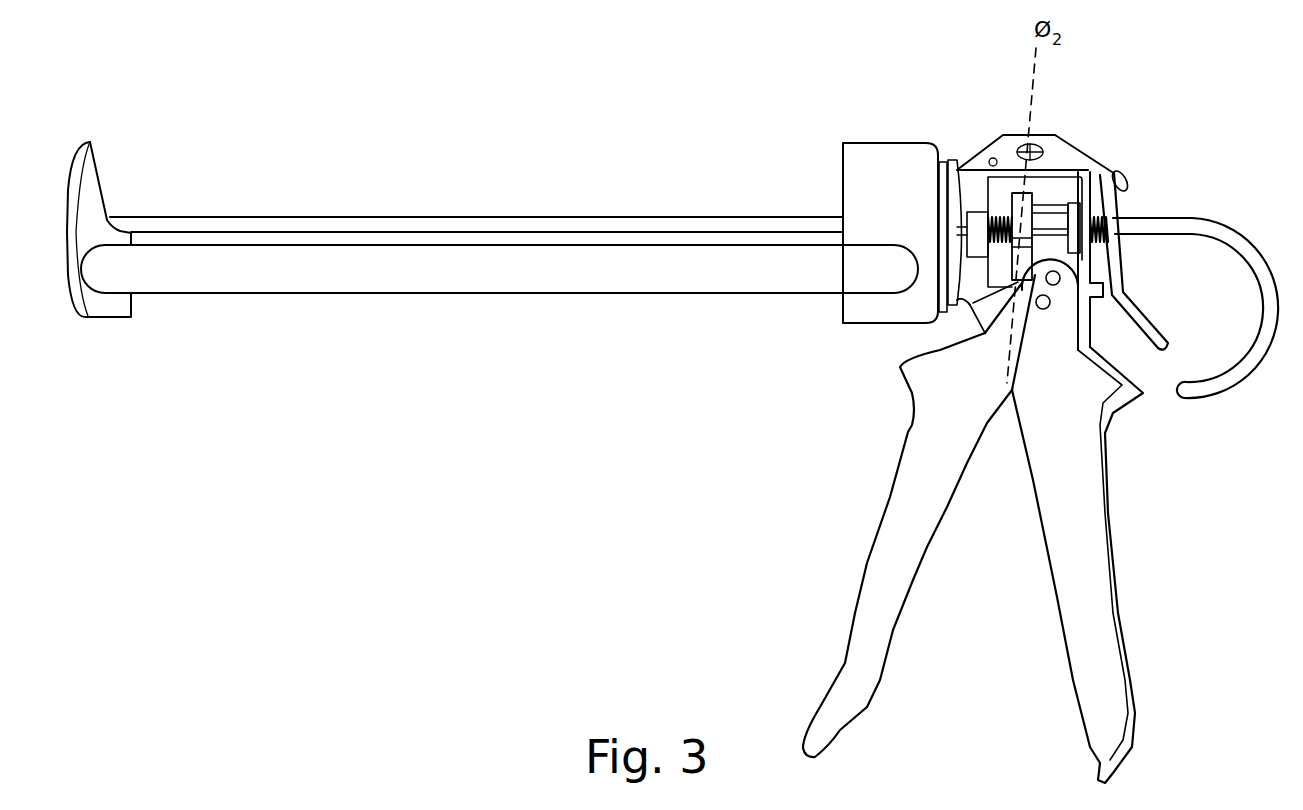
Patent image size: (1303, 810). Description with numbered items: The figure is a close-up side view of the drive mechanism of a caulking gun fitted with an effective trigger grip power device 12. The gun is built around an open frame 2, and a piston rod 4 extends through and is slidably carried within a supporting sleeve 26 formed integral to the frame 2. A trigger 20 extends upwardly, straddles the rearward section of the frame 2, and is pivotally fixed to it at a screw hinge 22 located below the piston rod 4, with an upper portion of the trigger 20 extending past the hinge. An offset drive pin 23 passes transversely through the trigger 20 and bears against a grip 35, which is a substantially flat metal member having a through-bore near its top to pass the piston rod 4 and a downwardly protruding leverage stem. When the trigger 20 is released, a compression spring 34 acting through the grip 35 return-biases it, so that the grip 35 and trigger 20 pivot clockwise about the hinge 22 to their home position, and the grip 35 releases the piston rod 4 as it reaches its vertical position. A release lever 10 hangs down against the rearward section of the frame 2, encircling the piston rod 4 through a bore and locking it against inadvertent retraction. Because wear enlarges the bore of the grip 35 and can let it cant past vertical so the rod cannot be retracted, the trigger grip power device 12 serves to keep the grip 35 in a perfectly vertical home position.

The open frame 2 is at (1070, 143).
The piston rod 4 is at (1193, 215).
The release lever 10 is at (1153, 323).
The effective trigger grip power device 12 is at (1043, 202).
The trigger 20 is at (925, 550).
The screw hinge 22 is at (1046, 308).
The offset drive pin 23 is at (1060, 283).
The supporting sleeve 26 is at (973, 303).
The compression spring 34 is at (1000, 220).
The grip 35 is at (1012, 195).